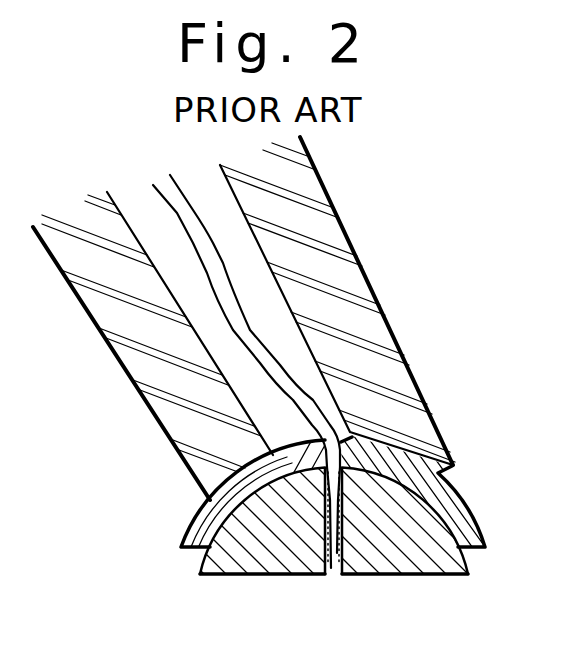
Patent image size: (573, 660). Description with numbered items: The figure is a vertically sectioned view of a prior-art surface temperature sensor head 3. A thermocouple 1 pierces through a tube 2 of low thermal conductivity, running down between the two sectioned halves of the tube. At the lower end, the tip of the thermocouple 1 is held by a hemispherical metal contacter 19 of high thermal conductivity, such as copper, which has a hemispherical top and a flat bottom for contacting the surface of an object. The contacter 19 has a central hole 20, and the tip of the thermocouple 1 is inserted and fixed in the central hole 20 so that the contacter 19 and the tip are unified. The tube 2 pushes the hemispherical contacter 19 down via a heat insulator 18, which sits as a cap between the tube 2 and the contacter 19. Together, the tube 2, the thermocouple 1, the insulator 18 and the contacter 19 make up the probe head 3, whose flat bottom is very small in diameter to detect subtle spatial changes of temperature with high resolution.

The thermocouple 1 is at (190, 245).
The tube 2 is at (148, 330).
The sensor head 3 is at (331, 526).
The heat insulator 18 is at (458, 519).
The hemispherical metal contacter 19 is at (402, 553).
The central hole 20 is at (349, 557).